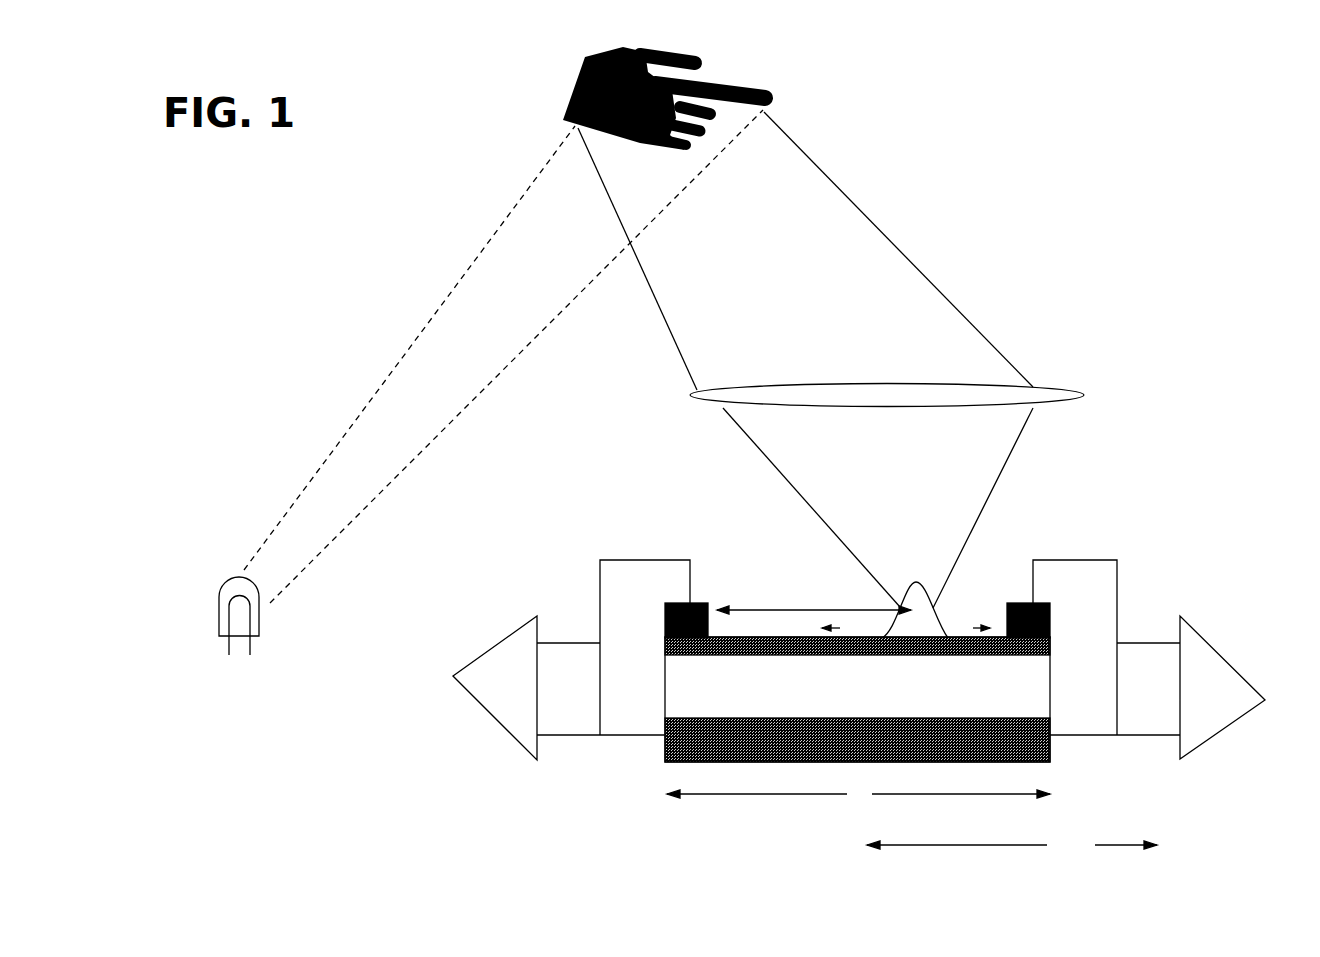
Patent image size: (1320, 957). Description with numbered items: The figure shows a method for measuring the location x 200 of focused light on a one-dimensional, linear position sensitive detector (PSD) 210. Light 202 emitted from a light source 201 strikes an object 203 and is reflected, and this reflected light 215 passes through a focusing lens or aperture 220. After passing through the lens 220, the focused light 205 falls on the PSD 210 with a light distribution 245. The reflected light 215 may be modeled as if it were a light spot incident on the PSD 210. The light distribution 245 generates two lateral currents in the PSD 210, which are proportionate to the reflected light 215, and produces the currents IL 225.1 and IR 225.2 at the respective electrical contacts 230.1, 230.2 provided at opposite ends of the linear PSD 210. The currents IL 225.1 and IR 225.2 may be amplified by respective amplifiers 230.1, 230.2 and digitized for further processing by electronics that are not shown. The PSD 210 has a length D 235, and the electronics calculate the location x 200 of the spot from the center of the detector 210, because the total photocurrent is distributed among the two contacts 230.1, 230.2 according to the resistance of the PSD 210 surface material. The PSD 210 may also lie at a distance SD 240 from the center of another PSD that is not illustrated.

The object 203 is at (638, 98).
The emitted light 202 is at (503, 356).
The light source 201 is at (233, 649).
The reflected light 215 is at (805, 251).
The focusing lens or aperture 220 is at (1050, 392).
The focused light 205 is at (878, 508).
The light distribution 245 is at (917, 581).
The linear position sensitive detector (PSD) 210 is at (857, 699).
The electrical contact 230.1 is at (678, 603).
The electrical contact 230.2 is at (1035, 603).
The current IL 225.1 is at (631, 600).
The current IR 225.2 is at (1085, 575).
The location x 200 is at (800, 578).
The length D 235 is at (858, 808).
The distance SD 240 is at (1075, 862).